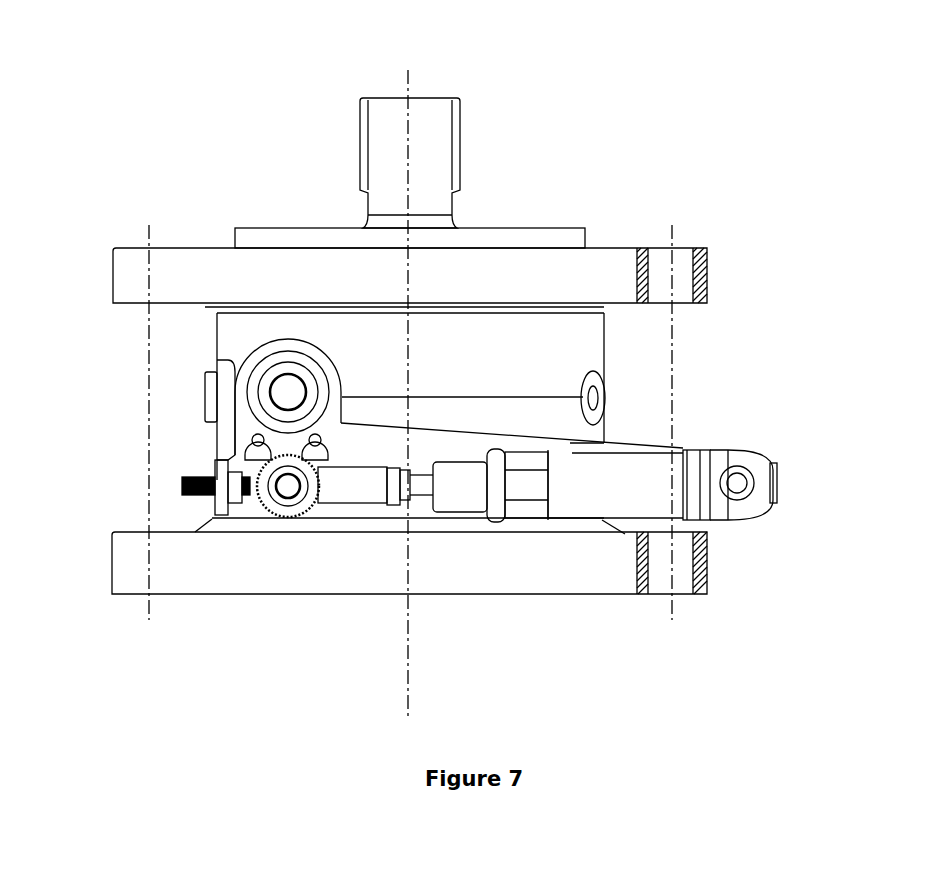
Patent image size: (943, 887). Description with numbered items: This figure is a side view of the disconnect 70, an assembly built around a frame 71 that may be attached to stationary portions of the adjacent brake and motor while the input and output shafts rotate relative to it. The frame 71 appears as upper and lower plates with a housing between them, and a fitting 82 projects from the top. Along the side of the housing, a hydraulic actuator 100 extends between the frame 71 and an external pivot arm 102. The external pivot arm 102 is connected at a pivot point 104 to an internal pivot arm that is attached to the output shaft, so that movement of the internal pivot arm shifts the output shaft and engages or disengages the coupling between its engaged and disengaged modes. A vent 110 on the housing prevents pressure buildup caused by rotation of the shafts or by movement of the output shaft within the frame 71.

The disconnect 70 is at (510, 232).
The frame 71 is at (185, 585).
The fitting 82 is at (380, 118).
The hydraulic actuator 100 is at (645, 505).
The external pivot arm 102 is at (290, 445).
The pivot point 104 is at (283, 395).
The vent 110 is at (603, 398).